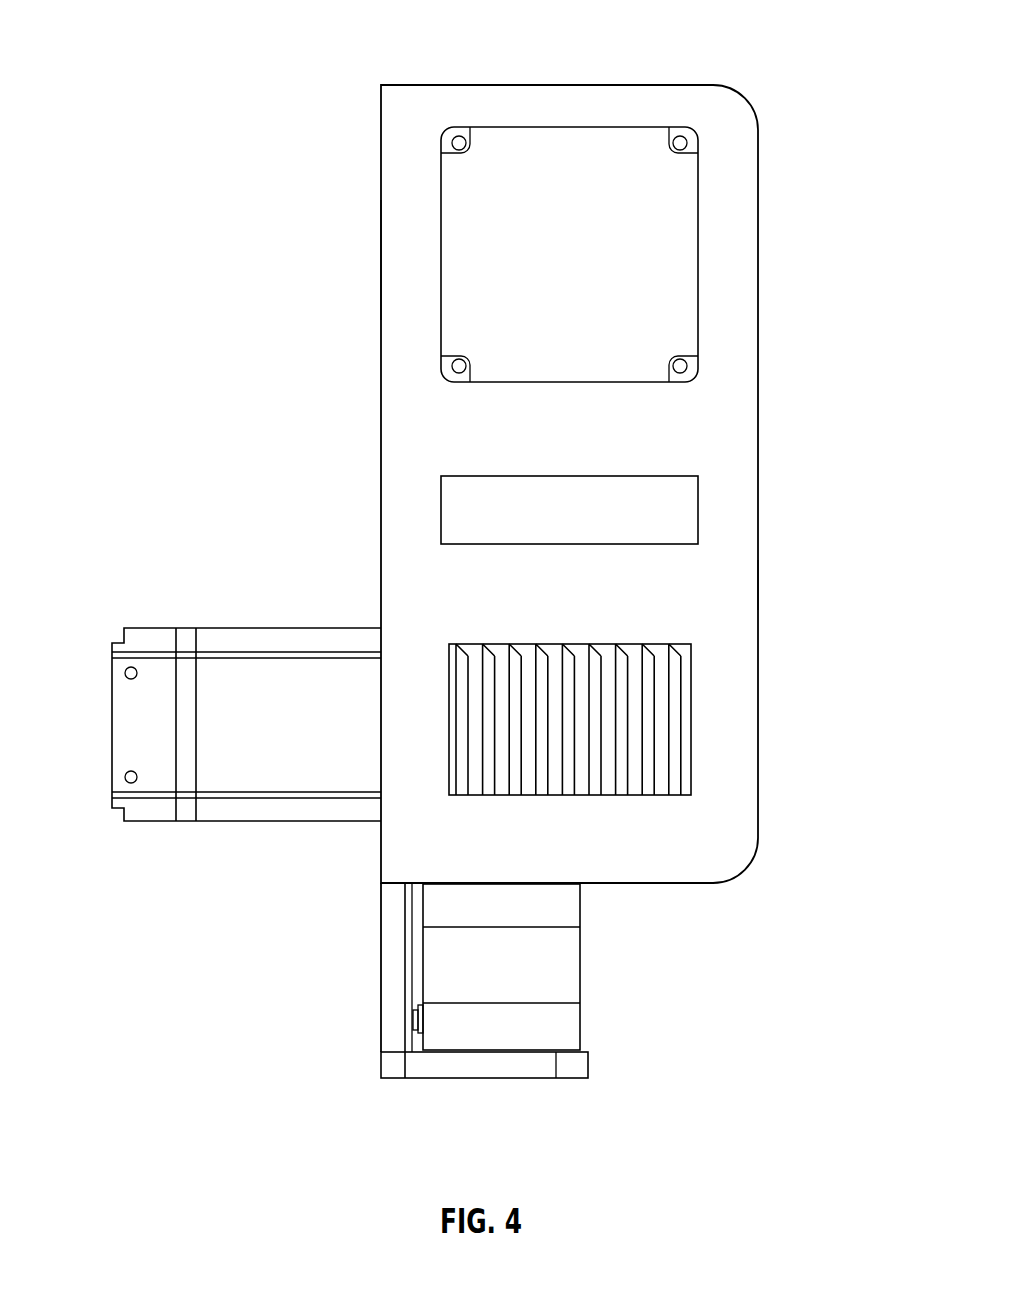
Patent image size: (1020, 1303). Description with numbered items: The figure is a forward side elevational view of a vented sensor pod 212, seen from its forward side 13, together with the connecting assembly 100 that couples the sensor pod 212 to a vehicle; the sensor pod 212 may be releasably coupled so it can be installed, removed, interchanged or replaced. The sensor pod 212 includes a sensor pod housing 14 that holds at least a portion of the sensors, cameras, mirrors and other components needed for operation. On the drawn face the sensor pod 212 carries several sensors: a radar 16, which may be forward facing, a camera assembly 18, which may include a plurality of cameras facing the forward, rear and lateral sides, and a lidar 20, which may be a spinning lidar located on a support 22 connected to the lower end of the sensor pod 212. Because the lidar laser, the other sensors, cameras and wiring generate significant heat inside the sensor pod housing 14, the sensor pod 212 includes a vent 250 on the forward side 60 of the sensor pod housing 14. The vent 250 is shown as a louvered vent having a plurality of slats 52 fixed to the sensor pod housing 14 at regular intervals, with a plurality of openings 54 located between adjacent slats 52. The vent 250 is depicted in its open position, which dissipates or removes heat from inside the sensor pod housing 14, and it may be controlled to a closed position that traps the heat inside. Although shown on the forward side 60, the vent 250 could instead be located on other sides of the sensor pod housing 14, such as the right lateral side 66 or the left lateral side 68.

The sensor pod 212 is at (778, 53).
The forward side 13 is at (129, 179).
The sensor pod housing 14 is at (758, 740).
The radar 16 is at (721, 207).
The camera assembly 18 is at (698, 510).
The lidar 20 is at (563, 966).
The support 22 is at (530, 1080).
The slats 52 is at (637, 710).
The openings 54 is at (496, 657).
The forward side 60 is at (735, 625).
The right lateral side 66 is at (758, 585).
The left lateral side 68 is at (381, 263).
The connecting assembly 100 is at (208, 600).
The vent 250 is at (463, 748).